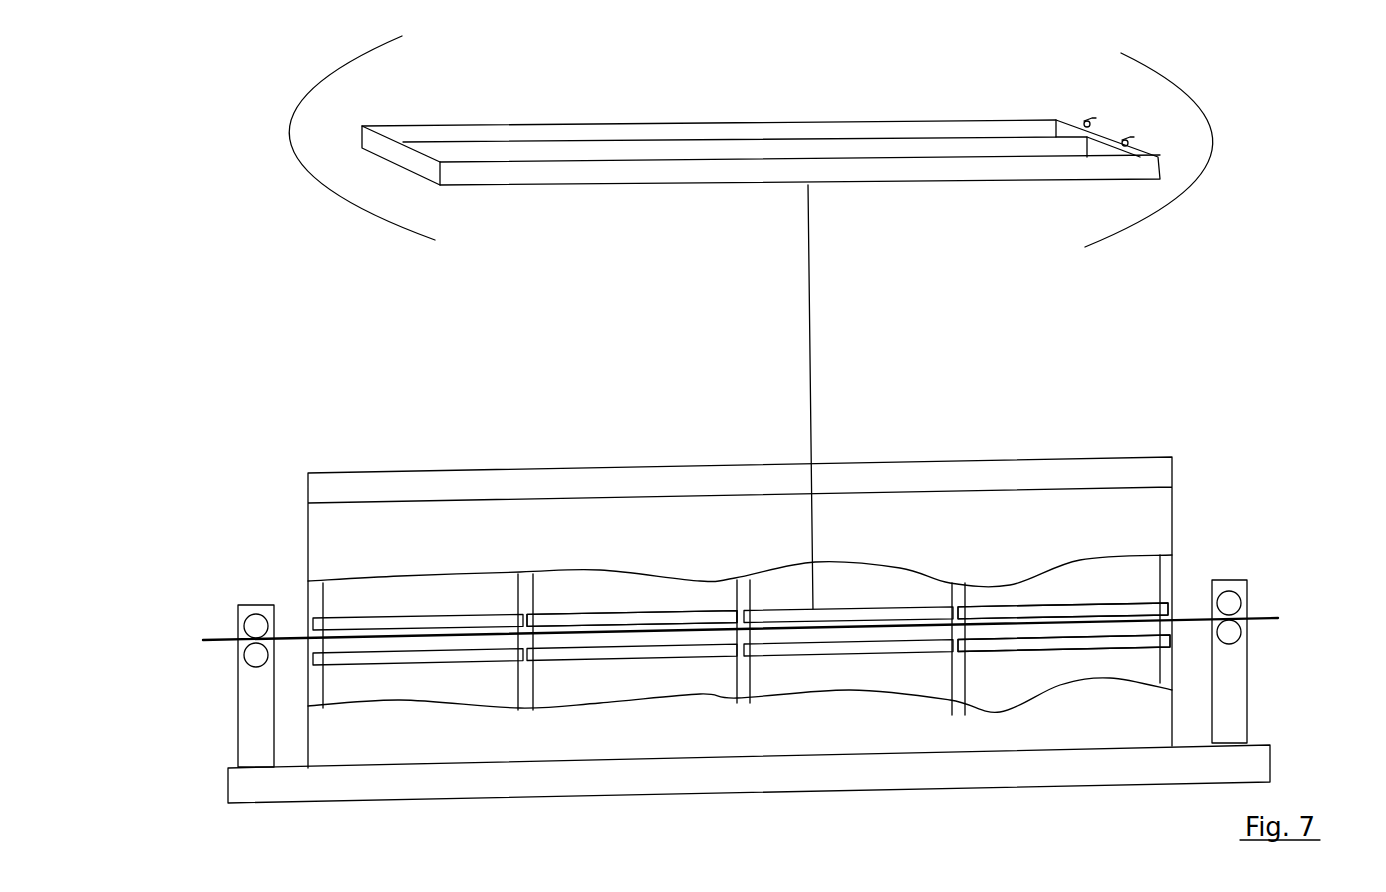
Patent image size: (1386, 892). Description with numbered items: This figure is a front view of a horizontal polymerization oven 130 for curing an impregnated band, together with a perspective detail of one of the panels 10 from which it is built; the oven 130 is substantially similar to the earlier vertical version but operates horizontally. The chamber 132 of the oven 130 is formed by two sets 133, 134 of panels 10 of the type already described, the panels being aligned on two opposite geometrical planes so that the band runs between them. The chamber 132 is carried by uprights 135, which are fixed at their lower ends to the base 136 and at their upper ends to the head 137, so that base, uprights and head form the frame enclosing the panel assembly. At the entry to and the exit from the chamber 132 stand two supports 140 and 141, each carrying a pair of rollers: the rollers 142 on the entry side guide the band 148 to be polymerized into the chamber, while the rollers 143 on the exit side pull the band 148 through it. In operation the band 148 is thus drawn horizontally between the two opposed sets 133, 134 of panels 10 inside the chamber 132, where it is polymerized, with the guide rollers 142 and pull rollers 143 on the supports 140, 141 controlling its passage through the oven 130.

The panel 10 is at (878, 112).
The polymerization oven 130 is at (1181, 447).
The chamber 132 is at (623, 637).
The first set of panels 133 is at (1120, 598).
The second set of panels 134 is at (1012, 642).
The uprights 135 is at (316, 597).
The base 136 is at (405, 785).
The head 137 is at (380, 481).
The support 140 is at (252, 722).
The support 141 is at (1237, 700).
The guide rollers 142 is at (255, 653).
The pull rollers 143 is at (1228, 603).
The band 148 is at (216, 640).